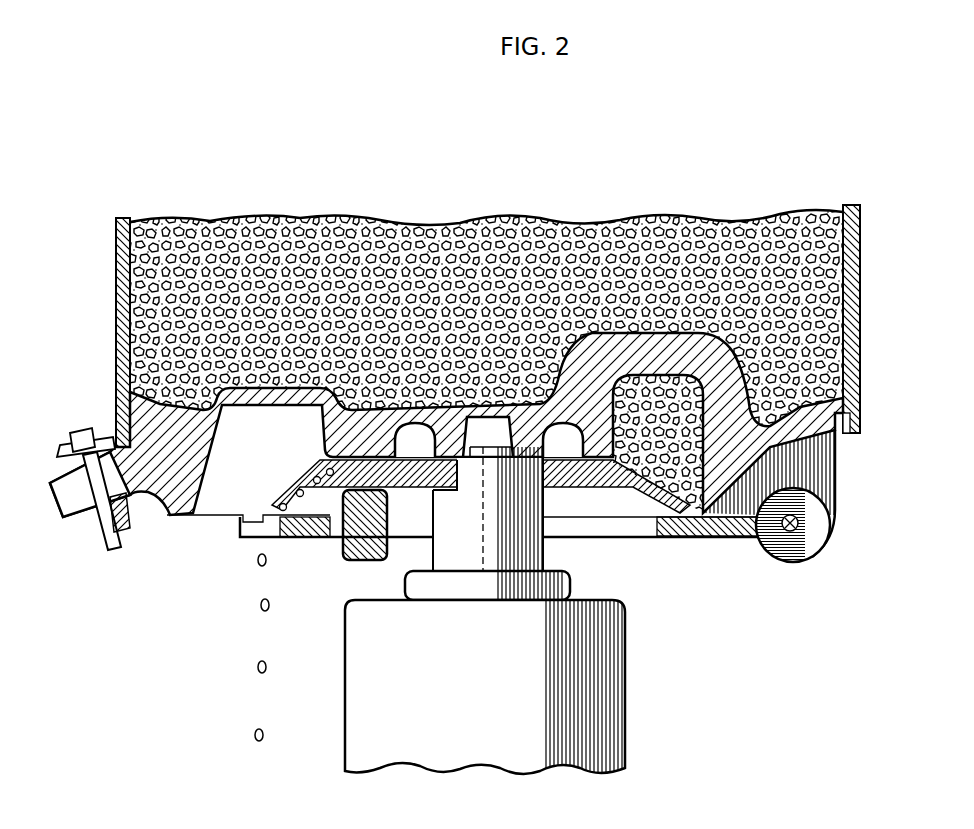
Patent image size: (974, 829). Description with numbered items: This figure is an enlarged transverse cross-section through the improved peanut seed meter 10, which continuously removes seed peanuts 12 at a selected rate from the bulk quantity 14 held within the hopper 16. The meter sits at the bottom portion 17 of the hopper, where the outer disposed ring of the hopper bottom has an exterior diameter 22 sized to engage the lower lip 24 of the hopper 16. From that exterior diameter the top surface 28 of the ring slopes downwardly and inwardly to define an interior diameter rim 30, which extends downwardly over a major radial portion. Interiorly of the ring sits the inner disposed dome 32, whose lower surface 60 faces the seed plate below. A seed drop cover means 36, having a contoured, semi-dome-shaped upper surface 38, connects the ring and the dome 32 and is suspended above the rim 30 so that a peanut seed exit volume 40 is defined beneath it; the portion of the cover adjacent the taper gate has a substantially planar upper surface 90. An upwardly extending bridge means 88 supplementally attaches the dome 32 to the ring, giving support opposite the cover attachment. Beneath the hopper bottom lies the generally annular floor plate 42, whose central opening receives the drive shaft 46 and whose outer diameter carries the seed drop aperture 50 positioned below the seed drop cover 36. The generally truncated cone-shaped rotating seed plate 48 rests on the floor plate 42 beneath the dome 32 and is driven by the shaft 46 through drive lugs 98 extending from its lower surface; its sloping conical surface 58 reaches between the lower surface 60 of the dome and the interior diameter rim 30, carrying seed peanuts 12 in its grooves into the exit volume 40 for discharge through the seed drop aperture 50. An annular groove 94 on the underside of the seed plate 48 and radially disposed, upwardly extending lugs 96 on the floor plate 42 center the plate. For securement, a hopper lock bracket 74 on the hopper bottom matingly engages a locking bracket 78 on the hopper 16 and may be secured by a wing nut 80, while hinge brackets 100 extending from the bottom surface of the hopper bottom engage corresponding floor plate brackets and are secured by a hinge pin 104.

The improved peanut seed meter 10 is at (636, 594).
The seed peanuts 12 is at (258, 665).
The bulk quantity of peanut seeds 14 is at (800, 322).
The peanut seed hopper 16 is at (857, 252).
The bottom portion of hopper 17 is at (866, 386).
The exterior diameter of outer disposed ring 22 is at (852, 432).
The lower lip of hopper 24 is at (860, 410).
The top surface of outer disposed ring 28 is at (838, 372).
The interior diameter rim 30 is at (712, 523).
The inner disposed dome 32 is at (450, 397).
The seed drop cover means 36 is at (255, 385).
The upper surface of seed drop cover 38 is at (203, 370).
The peanut seed exit volume 40 is at (247, 474).
The floor plate 42 is at (716, 538).
The drive shaft 46 is at (528, 552).
The rotating seed plate 48 is at (673, 345).
The seed drop aperture 50 is at (237, 543).
The sloping conical surface of seed plate 58 is at (690, 497).
The lower surface of dome 60 is at (433, 490).
The hopper lock bracket 74 is at (120, 487).
The locking bracket 78 is at (107, 450).
The wing nut 80 is at (97, 490).
The bridge means 88 is at (700, 350).
The upper surface of seed drop cover portion 90 is at (293, 385).
The annular groove 94 is at (575, 497).
The lugs 96 is at (353, 500).
The drive lugs 98 is at (430, 540).
The hinge brackets 100 is at (815, 488).
The hinge pin 104 is at (793, 523).